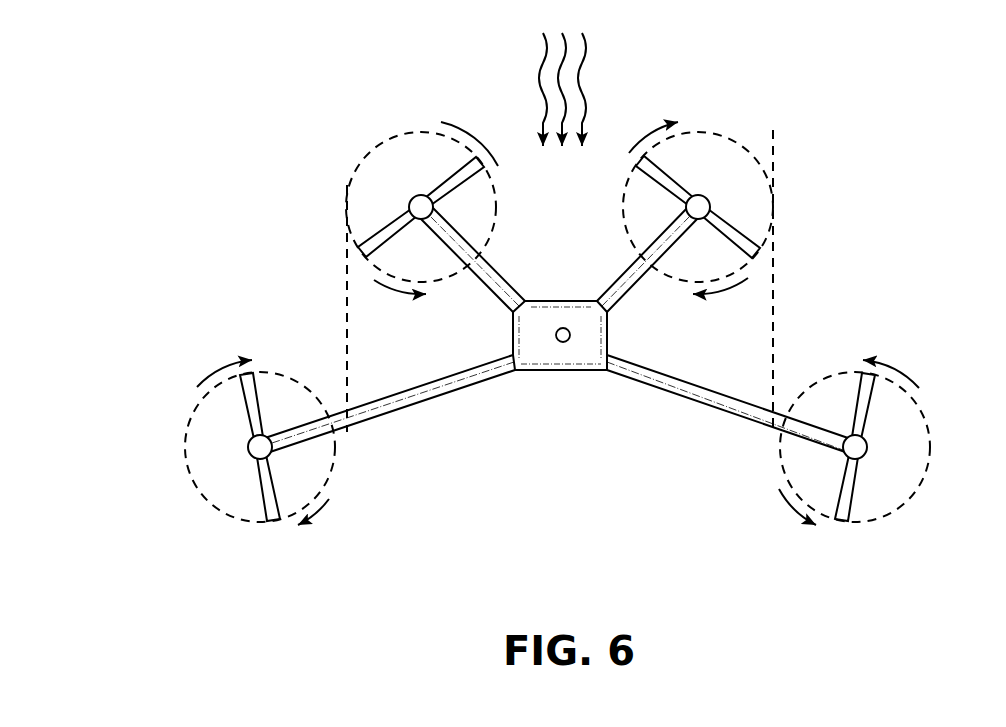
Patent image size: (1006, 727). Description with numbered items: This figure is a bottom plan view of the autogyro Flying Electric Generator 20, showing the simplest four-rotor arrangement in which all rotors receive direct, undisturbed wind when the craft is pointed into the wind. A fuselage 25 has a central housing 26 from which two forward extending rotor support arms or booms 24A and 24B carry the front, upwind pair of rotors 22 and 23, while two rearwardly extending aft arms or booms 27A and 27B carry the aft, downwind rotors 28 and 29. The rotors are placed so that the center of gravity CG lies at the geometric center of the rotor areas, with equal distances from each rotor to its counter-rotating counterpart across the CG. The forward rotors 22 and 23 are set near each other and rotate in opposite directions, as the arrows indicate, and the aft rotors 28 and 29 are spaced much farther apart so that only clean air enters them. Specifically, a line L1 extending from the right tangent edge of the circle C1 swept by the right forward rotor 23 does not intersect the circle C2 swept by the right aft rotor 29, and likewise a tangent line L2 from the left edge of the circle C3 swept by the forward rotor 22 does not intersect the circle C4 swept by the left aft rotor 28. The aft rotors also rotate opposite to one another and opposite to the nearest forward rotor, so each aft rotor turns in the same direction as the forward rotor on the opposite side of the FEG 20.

The autogyro Flying Electric Generator 20 is at (542, 394).
The left forward rotor 22 is at (412, 200).
The right forward rotor 23 is at (711, 207).
The forward rotor support arm 24A is at (502, 270).
The forward rotor support arm 24B is at (630, 286).
The fuselage 25 is at (608, 383).
The central housing 26 is at (560, 300).
The aft rotor support arm 27A is at (415, 388).
The aft rotor support arm 27B is at (725, 412).
The left aft rotor 28 is at (248, 446).
The right aft rotor 29 is at (868, 447).
The center of gravity CG is at (563, 343).
The circle swept by right forward rotor tip C1 is at (760, 137).
The circle swept by right aft rotor tip C2 is at (920, 395).
The circle swept by left forward rotor tip C3 is at (345, 186).
The circle swept by left aft rotor C4 is at (338, 458).
The right tangent line L1 is at (773, 305).
The left tangent line L2 is at (347, 305).